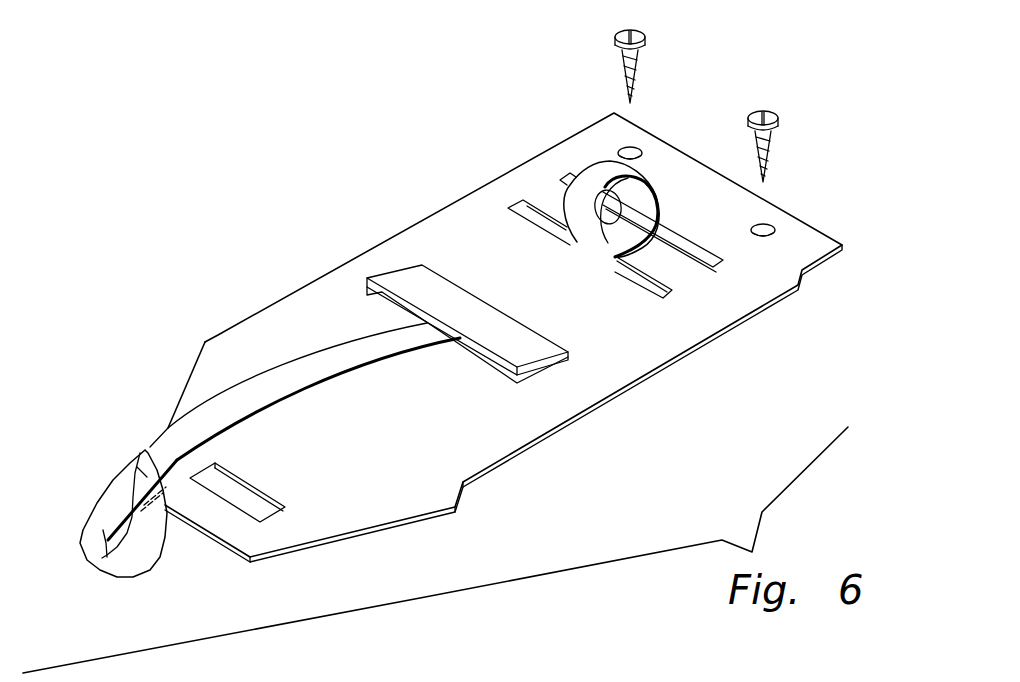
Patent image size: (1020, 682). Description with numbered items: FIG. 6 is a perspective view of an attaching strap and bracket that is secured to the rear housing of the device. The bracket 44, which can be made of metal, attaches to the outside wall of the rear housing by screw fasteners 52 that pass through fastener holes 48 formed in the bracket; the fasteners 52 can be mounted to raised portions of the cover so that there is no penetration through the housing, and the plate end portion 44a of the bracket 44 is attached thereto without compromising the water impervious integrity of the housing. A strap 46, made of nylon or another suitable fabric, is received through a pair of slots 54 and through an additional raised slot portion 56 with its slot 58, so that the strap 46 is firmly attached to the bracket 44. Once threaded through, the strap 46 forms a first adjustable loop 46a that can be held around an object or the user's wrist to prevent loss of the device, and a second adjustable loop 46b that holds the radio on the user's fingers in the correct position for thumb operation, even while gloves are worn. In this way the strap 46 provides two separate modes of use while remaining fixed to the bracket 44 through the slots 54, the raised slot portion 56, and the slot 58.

The bracket 44 is at (810, 247).
The plate end portion 44a is at (377, 488).
The strap 46 is at (293, 372).
The first adjustable loop 46a is at (133, 457).
The second adjustable loop 46b is at (602, 170).
The fastener holes 48 is at (765, 223).
The screw fasteners 52 is at (645, 32).
The slots 54 is at (755, 285).
The raised slot portion 56 is at (530, 348).
The slot 58 is at (247, 500).